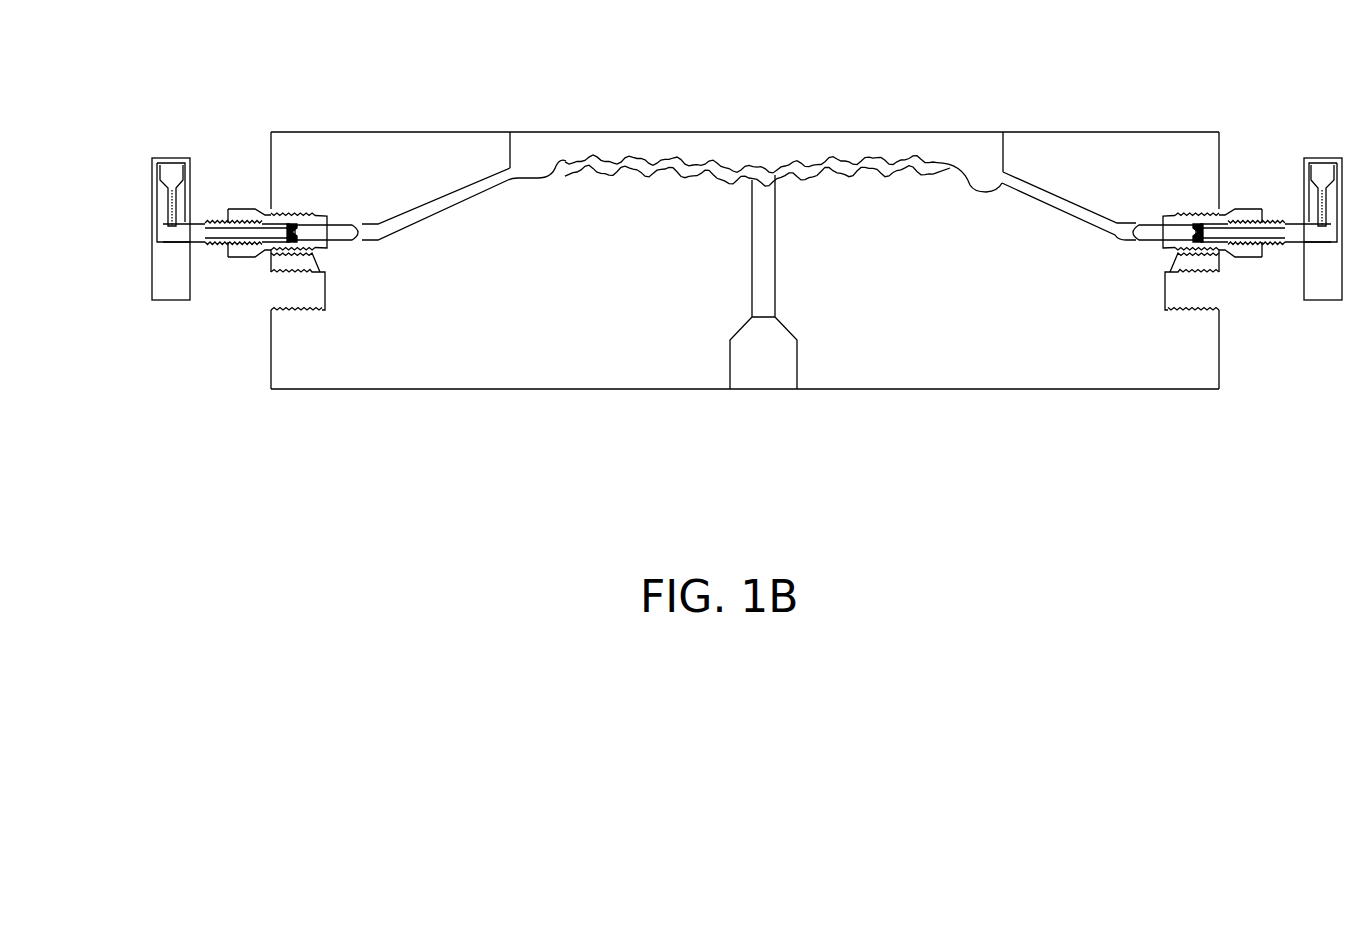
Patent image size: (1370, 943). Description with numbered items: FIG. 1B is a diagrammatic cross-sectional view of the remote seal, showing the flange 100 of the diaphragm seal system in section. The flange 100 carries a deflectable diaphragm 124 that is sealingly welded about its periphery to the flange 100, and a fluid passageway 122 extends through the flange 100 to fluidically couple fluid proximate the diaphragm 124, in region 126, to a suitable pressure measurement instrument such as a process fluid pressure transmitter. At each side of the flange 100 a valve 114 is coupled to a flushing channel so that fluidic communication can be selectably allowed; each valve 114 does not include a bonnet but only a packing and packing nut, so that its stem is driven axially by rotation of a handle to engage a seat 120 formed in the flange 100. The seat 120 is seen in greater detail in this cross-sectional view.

The flange 100 is at (1219, 320).
The valve 114 is at (152, 273).
The seat 120 is at (1140, 218).
The fluid passageway 122 is at (760, 240).
The diaphragm 124 is at (690, 165).
The region 126 is at (770, 172).